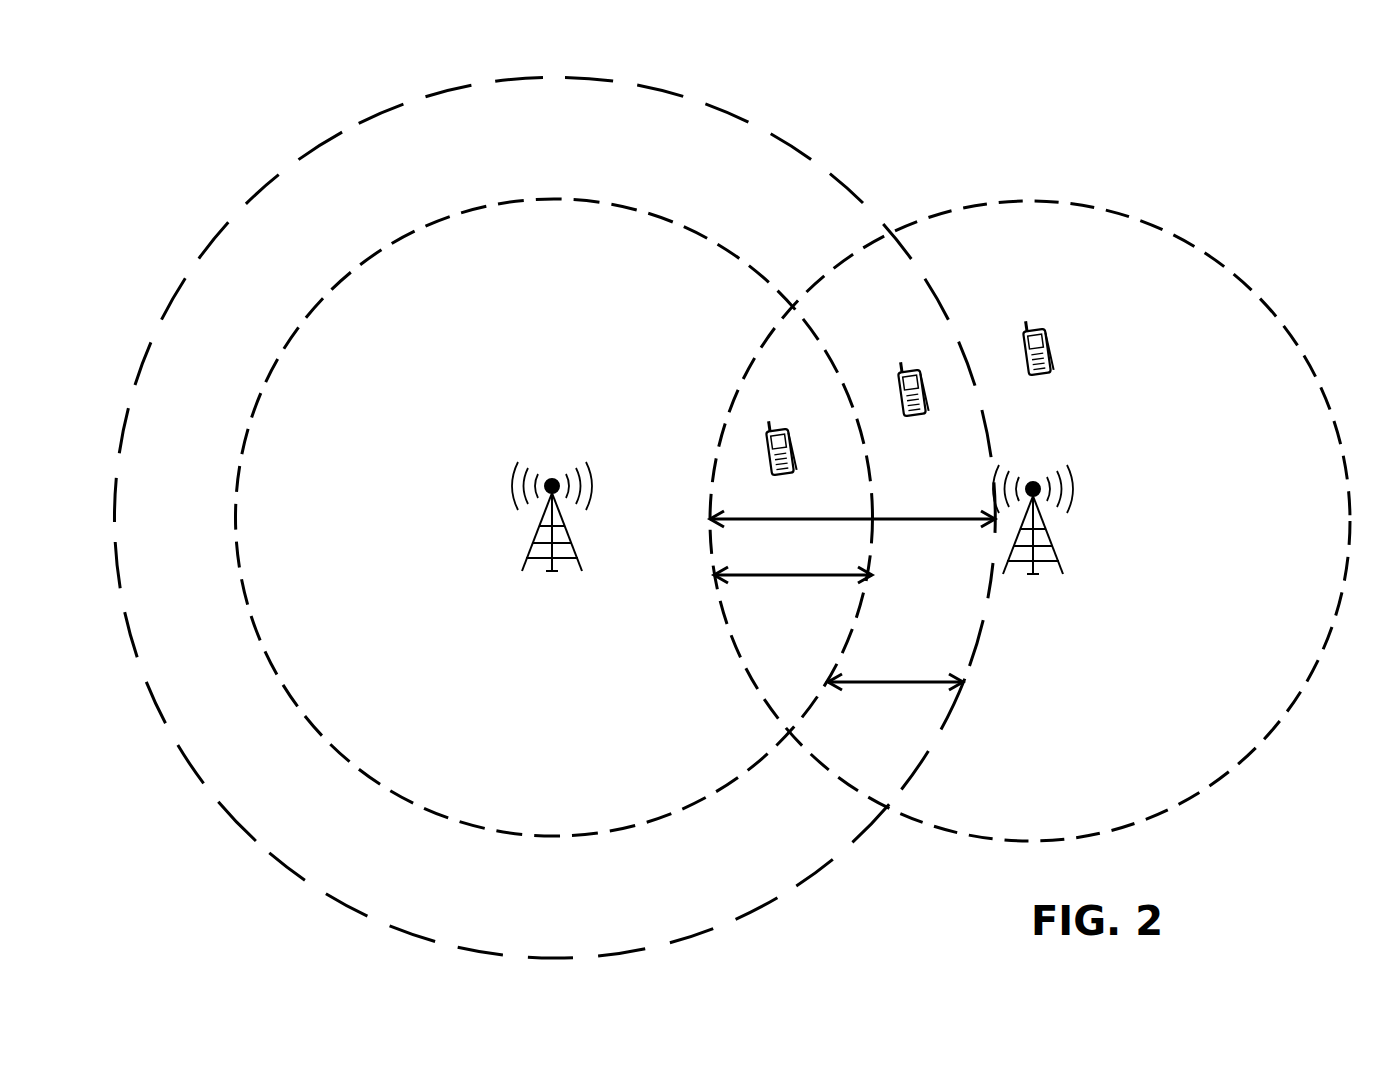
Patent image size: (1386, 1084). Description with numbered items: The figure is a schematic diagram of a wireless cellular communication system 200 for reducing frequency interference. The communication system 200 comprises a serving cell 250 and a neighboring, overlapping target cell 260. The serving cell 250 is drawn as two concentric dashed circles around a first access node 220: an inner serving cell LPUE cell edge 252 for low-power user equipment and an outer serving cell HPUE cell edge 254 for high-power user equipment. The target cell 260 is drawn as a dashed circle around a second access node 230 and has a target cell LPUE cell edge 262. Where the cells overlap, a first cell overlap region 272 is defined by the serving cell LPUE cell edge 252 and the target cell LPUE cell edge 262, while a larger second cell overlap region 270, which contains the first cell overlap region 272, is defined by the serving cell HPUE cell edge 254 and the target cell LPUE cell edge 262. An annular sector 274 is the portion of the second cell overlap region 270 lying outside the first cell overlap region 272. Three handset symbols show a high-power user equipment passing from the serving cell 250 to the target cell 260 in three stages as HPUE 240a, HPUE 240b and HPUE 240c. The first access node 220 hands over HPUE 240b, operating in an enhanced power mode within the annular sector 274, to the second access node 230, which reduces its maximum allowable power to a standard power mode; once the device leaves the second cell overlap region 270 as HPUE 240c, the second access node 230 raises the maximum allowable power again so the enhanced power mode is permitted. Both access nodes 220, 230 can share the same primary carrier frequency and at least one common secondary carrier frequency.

The communication system 200 is at (1054, 157).
The first access node 220 is at (543, 518).
The second access node 230 is at (1052, 520).
The high-power user equipment (first stage) 240a is at (778, 460).
The high-power user equipment (second stage) 240b is at (910, 402).
The high-power user equipment (third stage) 240c is at (1052, 364).
The serving cell 250 is at (622, 298).
The serving cell LPUE cell edge 252 is at (255, 400).
The serving cell HPUE cell edge 254 is at (340, 132).
The target cell 260 is at (1160, 313).
The target cell LPUE cell edge 262 is at (1302, 345).
The second cell overlap region 270 is at (890, 520).
The first cell overlap region 272 is at (763, 577).
The annular sector 274 is at (890, 683).